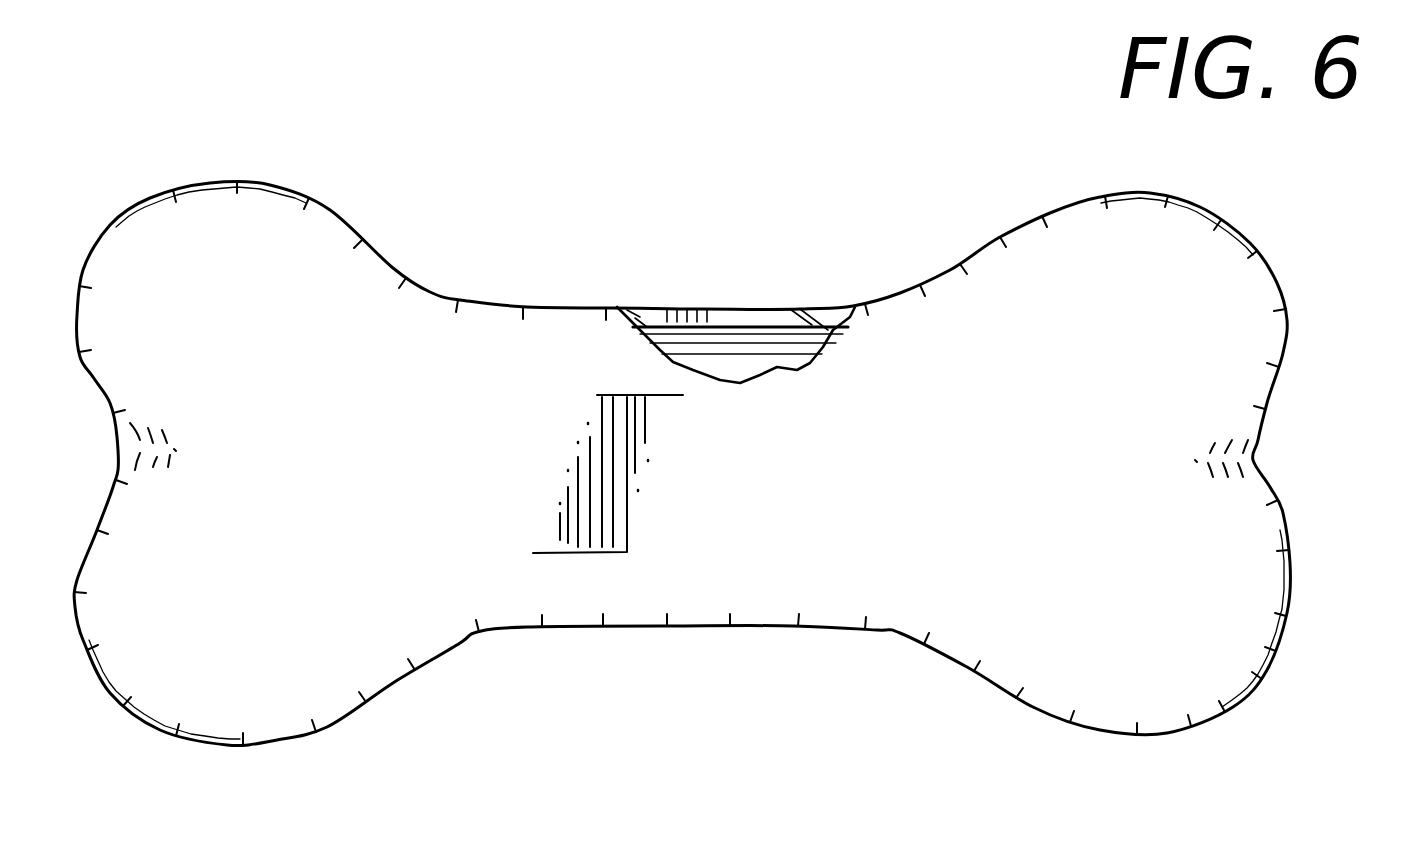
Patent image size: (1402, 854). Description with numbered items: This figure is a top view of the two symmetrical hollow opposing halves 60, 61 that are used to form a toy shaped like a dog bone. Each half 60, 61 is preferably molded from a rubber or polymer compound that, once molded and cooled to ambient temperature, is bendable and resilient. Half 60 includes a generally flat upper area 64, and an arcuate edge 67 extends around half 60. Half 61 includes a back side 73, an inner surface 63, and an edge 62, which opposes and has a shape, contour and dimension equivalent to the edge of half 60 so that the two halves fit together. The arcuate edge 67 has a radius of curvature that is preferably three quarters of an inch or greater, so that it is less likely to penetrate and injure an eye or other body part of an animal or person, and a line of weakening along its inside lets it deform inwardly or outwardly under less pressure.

The half 60 is at (1193, 323).
The half 61 is at (823, 298).
The edge 62 is at (638, 315).
The inner surface 63 is at (740, 353).
The generally flat upper area 64 is at (738, 558).
The arcuate edge 67 is at (374, 276).
The back side 73 is at (788, 307).